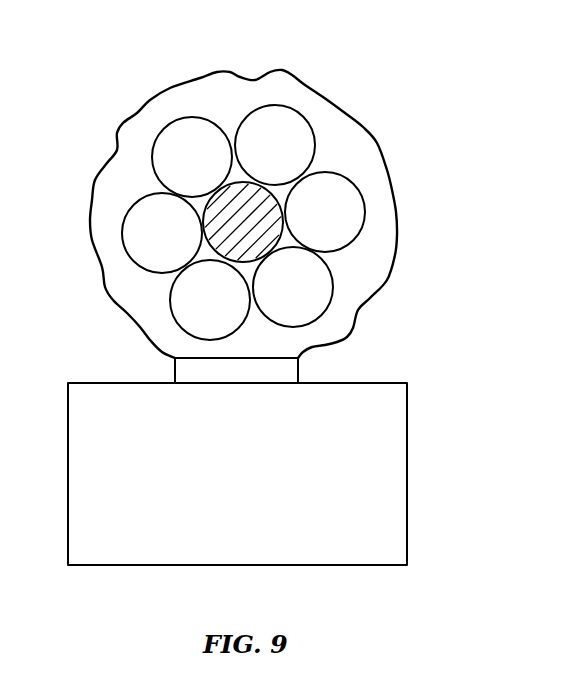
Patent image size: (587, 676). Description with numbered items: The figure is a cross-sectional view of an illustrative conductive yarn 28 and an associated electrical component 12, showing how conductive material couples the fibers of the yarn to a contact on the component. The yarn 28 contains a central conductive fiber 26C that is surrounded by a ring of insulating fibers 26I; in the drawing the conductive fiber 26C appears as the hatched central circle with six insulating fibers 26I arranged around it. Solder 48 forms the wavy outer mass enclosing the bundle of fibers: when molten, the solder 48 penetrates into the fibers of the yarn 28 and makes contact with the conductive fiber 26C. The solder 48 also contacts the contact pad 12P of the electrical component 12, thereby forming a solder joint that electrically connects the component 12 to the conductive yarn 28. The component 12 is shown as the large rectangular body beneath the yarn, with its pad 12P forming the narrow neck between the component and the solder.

The item 12 is at (407, 482).
The portion of item 12P is at (300, 364).
The conductive fiber 26C is at (253, 208).
The insulating fibers 26I is at (265, 120).
The yarn 28 is at (332, 153).
The solder 48 is at (127, 298).